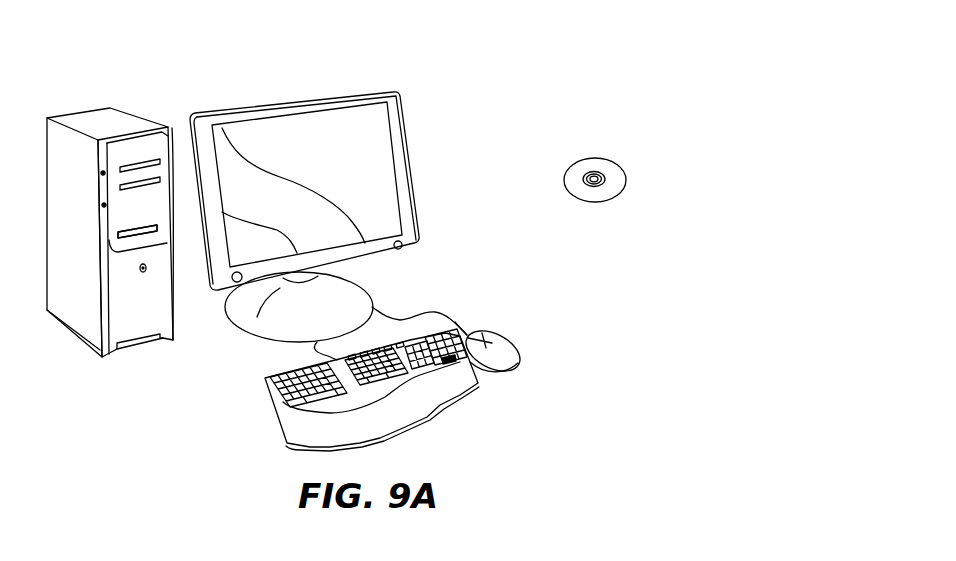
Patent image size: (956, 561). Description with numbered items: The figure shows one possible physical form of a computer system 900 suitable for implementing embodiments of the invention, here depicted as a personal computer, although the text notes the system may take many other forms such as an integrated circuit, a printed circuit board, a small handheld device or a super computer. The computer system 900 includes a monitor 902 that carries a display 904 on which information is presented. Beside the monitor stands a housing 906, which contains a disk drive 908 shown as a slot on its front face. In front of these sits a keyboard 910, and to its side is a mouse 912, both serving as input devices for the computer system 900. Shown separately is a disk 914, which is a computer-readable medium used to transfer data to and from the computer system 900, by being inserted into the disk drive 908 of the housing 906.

The computer system 900 is at (523, 75).
The monitor 902 is at (413, 188).
The display 904 is at (370, 128).
The housing 906 is at (94, 116).
The disk drive 908 is at (155, 230).
The keyboard 910 is at (283, 432).
The mouse 912 is at (520, 346).
The disk 914 is at (607, 158).